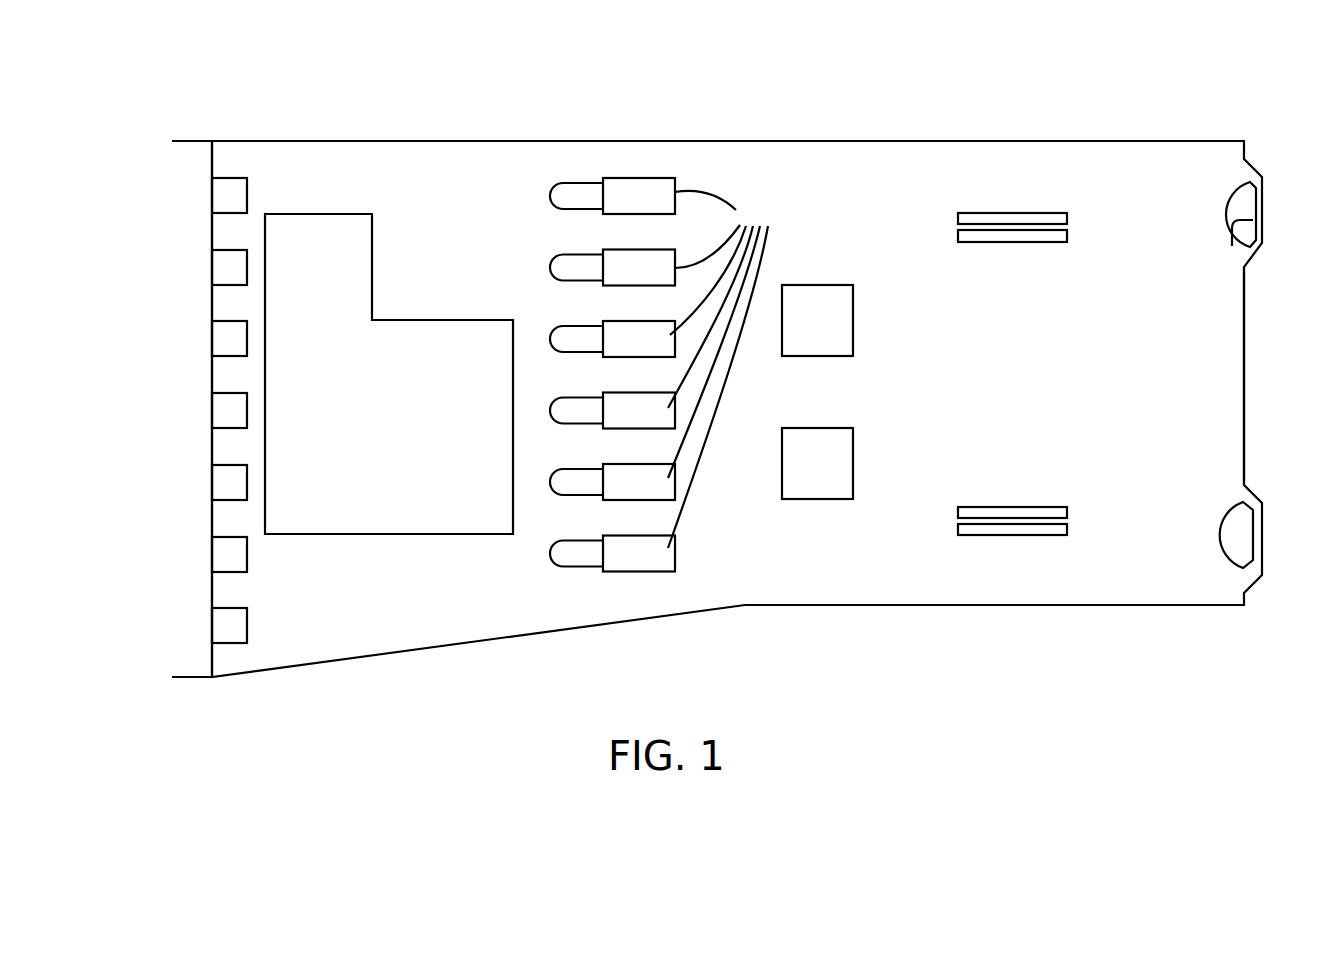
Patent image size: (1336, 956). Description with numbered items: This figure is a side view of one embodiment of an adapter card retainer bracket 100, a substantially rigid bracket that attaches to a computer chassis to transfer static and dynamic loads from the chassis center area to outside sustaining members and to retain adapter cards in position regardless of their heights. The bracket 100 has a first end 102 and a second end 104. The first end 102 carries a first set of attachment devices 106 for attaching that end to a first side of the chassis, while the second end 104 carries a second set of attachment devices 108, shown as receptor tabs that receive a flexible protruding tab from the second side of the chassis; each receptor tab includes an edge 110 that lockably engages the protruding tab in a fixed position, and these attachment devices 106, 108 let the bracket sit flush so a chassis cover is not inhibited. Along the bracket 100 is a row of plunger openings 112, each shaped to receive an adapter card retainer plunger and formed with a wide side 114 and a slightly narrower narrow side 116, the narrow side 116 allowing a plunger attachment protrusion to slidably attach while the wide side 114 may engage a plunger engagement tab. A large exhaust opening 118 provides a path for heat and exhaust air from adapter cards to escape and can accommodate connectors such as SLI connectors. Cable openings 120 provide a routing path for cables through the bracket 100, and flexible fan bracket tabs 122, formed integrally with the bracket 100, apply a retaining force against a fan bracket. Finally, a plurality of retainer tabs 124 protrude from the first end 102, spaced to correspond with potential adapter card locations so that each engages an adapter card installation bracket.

The adapter card retainer bracket 100 is at (243, 60).
The first end 102 is at (212, 232).
The second end 104 is at (1244, 347).
The first set of attachment devices 106 is at (192, 140).
The second set of attachment devices 108 is at (1262, 177).
The edge 110 is at (1240, 243).
The plunger openings 112 is at (723, 369).
The wide side 114 is at (640, 178).
The narrow side 116 is at (573, 182).
The exhaust opening 118 is at (472, 320).
The cable openings 120 is at (853, 340).
The fan bracket tabs 122 is at (1040, 507).
The retainer tabs 124 is at (218, 490).